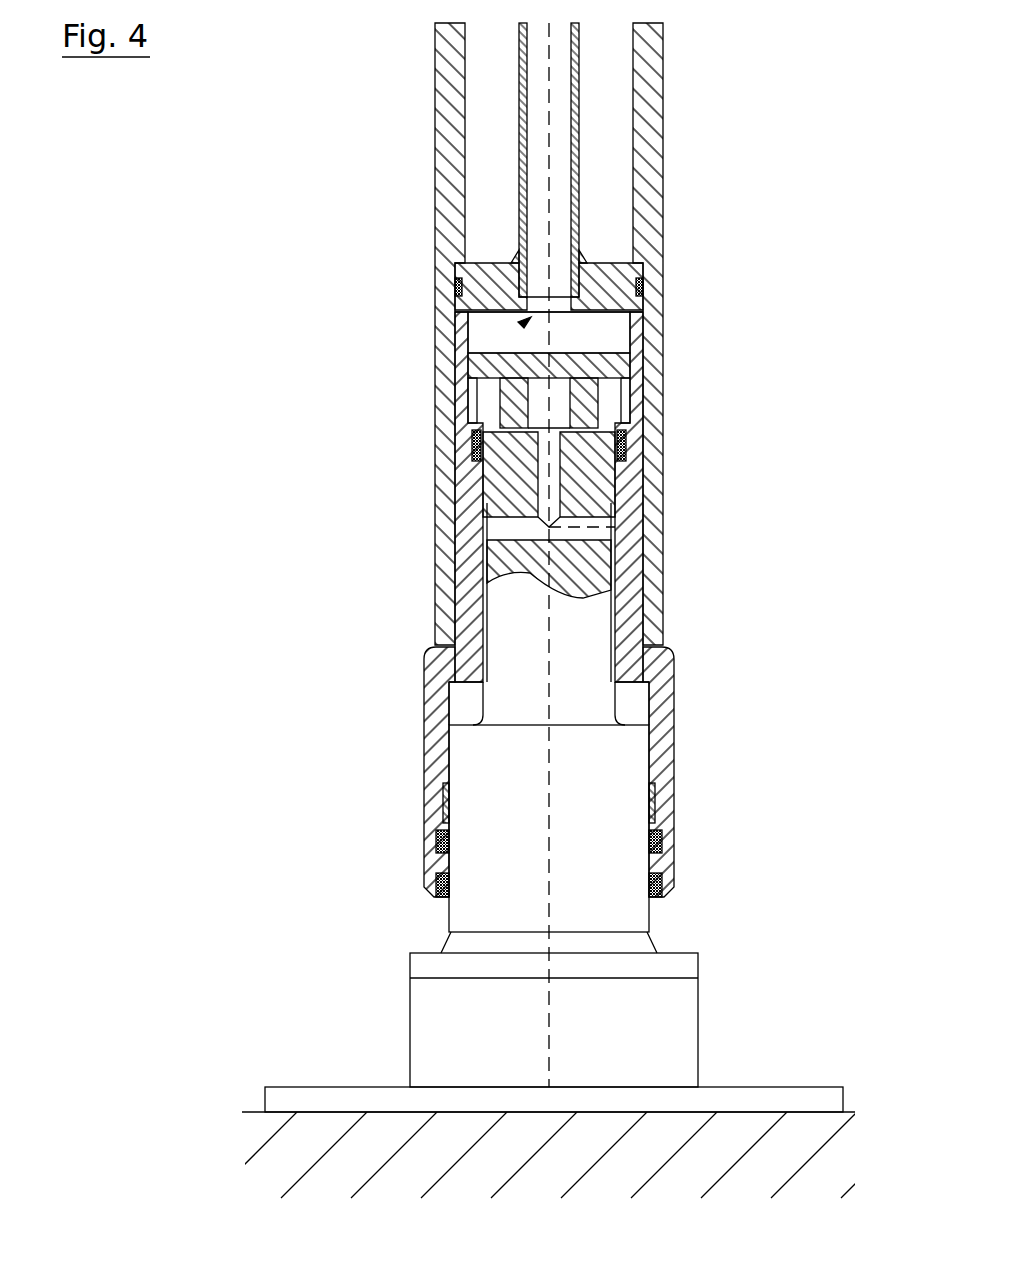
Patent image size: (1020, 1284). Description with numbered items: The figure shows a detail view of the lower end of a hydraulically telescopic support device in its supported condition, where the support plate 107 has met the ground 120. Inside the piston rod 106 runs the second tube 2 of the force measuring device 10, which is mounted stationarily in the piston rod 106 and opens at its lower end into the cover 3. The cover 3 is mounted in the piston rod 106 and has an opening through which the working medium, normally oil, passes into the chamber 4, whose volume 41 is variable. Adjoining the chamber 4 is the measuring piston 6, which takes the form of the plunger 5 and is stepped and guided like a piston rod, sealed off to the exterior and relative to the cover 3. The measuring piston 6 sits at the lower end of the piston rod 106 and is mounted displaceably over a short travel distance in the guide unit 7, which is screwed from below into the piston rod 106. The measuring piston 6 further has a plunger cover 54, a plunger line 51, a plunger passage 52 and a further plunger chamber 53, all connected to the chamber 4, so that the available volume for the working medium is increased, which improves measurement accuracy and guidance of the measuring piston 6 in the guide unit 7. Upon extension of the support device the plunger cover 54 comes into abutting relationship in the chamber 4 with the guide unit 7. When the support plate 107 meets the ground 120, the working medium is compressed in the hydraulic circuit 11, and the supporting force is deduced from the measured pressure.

The second tube 2 is at (577, 170).
The cover 3 is at (605, 273).
The chamber 4 is at (610, 320).
The plunger 5 is at (508, 635).
The measuring piston 6 is at (530, 690).
The guide unit 7 is at (472, 507).
The force measuring device 10 is at (530, 318).
The hydraulic circuit 11 is at (555, 83).
The volume 41 is at (565, 337).
The plunger line 51 is at (560, 497).
The plunger passage 52 is at (613, 593).
The further plunger chamber 53 is at (640, 705).
The plunger cover 54 is at (615, 365).
The piston rod 106 is at (643, 208).
The support plate 107 is at (370, 1102).
The ground 120 is at (253, 1170).